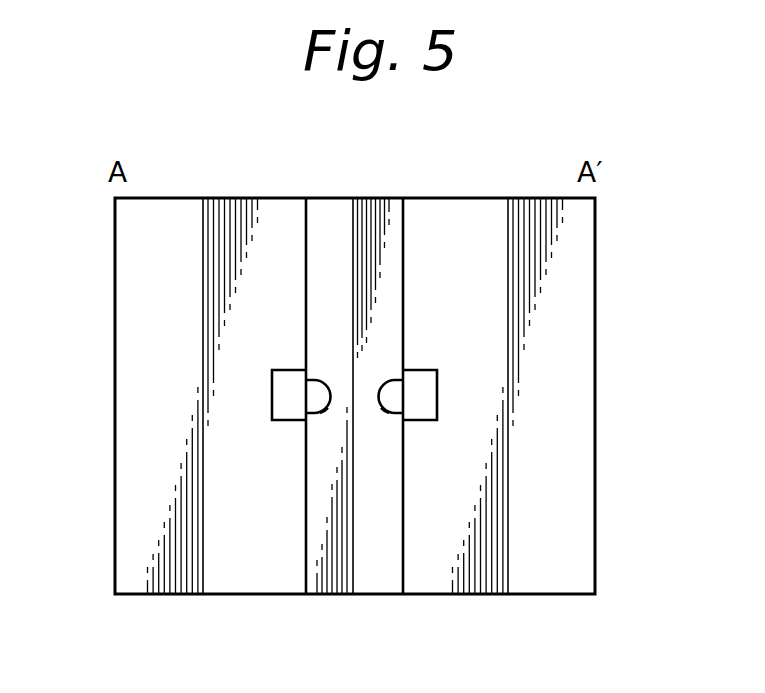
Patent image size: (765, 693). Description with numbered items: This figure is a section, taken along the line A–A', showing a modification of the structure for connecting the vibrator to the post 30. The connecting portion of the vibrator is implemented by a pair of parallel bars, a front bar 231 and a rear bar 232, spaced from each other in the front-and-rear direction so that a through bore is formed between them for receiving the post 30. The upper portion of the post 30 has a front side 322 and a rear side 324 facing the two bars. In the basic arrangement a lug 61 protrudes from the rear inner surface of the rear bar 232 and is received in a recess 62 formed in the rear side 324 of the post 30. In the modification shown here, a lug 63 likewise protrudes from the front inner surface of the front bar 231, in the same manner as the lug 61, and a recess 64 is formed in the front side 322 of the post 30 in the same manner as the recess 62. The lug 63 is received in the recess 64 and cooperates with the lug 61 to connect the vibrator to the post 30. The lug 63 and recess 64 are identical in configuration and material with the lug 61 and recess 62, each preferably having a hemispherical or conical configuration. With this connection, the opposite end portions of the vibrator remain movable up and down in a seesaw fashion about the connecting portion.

The post 30 is at (343, 216).
The front side 322 is at (306, 231).
The rear side 324 is at (404, 231).
The front bar 231 is at (285, 408).
The rear bar 232 is at (422, 408).
The lug 63 is at (313, 393).
The recess 64 is at (328, 415).
The lug 61 is at (393, 394).
The recess 62 is at (384, 415).